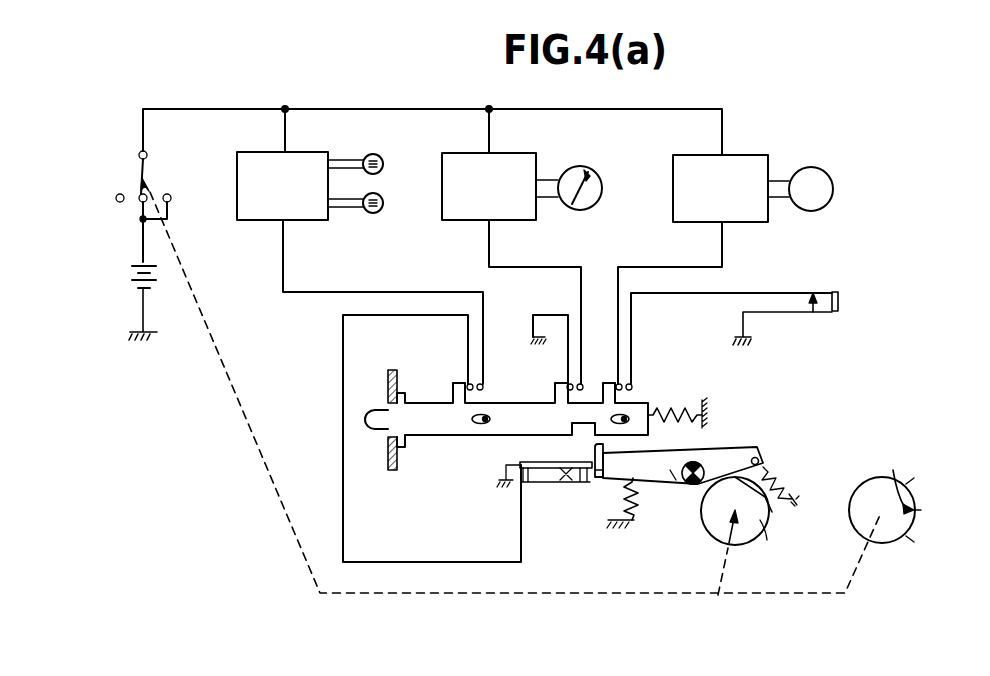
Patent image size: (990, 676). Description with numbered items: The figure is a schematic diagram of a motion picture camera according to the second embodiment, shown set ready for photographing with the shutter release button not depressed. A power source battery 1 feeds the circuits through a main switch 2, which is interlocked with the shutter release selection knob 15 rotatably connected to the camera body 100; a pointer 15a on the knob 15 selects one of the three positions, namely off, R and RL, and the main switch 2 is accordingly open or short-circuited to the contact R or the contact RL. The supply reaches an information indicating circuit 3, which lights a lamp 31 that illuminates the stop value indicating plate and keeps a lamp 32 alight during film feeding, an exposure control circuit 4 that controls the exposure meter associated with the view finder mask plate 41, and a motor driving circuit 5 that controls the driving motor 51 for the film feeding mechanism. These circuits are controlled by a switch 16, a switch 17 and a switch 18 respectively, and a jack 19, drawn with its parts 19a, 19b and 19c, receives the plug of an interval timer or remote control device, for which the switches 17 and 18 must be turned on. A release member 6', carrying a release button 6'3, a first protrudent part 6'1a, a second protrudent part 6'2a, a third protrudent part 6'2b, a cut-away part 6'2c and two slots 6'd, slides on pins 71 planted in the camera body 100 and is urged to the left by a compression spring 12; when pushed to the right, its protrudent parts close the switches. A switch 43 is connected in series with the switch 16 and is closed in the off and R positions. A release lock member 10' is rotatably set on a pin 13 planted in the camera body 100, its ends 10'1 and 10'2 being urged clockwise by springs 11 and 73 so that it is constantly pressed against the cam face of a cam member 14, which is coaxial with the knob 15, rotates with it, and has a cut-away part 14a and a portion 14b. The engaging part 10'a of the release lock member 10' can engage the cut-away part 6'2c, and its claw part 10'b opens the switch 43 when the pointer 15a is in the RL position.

The power source battery 1 is at (136, 276).
The main switch 2 is at (142, 172).
The information indicating circuit 3 is at (306, 156).
The lamp 31 is at (380, 157).
The lamp 32 is at (386, 198).
The exposure control circuit 4 is at (516, 156).
The view finder mask plate 41 is at (584, 166).
The motor driving circuit 5 is at (755, 157).
The driving motor 51 is at (818, 168).
The jack 19 is at (763, 317).
The switch fixed contact lead 19a is at (814, 312).
The switch movable contact 19b is at (814, 290).
The switch contact 19c is at (840, 306).
The switch 16 is at (470, 383).
The switch 17 is at (576, 383).
The switch 18 is at (626, 383).
The camera body 100 is at (386, 466).
The release button 6'3 is at (373, 412).
The release member 6' is at (541, 406).
The first protrudent part 6'1a is at (443, 367).
The second protrudent part 6'2a is at (538, 364).
The third protrudent part 6'2b is at (648, 348).
The cut-away part 6'2c is at (555, 448).
The slots 6'd is at (575, 391).
The pins 71 is at (688, 386).
The compression spring 12 is at (688, 404).
The switch 43 is at (546, 475).
The release lock member 10' is at (678, 494).
The engaging part 10'a is at (600, 516).
The claw part 10'b is at (566, 491).
The end of release lock member 10'1 is at (690, 505).
The end of release lock member 10'2 is at (790, 446).
The pin 13 is at (697, 462).
The spring 11 is at (622, 521).
The cam member 14 is at (766, 536).
The cut-away part 14a is at (773, 504).
The cam disc portion 14b is at (768, 533).
The spring 73 is at (781, 482).
The shutter release selection knob 15 is at (903, 510).
The pointer 15a is at (892, 472).